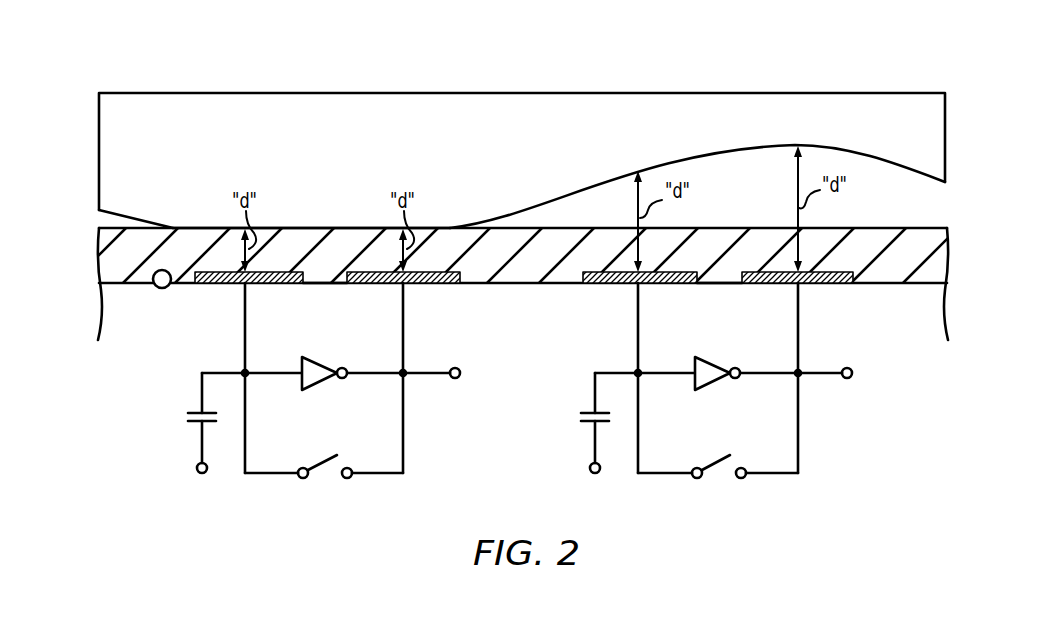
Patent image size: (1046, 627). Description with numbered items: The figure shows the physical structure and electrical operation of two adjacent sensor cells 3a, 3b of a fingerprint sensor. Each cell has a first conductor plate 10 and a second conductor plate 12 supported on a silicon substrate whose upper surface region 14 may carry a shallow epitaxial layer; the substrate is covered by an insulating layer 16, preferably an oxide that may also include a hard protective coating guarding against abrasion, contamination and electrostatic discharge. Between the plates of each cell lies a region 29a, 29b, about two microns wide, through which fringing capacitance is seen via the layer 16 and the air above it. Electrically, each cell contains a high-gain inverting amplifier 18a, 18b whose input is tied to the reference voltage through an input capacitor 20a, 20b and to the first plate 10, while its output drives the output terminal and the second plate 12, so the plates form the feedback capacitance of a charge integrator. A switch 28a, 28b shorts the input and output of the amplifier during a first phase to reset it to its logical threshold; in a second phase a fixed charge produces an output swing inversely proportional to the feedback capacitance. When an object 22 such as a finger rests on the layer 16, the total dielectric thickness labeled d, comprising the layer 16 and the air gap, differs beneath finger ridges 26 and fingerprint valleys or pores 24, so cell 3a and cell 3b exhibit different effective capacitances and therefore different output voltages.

The object 22 is at (483, 94).
The fingerprint valleys or pores 24 is at (731, 148).
The finger ridges 26 is at (345, 229).
The insulating layer 16 is at (870, 229).
The upper surface region 14 is at (162, 288).
The first conductor plate 10 is at (216, 284).
The second conductor plate 12 is at (441, 284).
The region 29a is at (325, 288).
The region 29b is at (722, 288).
The cell 3a is at (305, 414).
The cell 3b is at (724, 414).
The high-gain inverting amplifier 18a is at (325, 390).
The high-gain inverting amplifier 18b is at (718, 390).
The input capacitor 20a is at (188, 418).
The input capacitor 20b is at (582, 418).
The switch 28a is at (330, 484).
The switch 28b is at (724, 484).